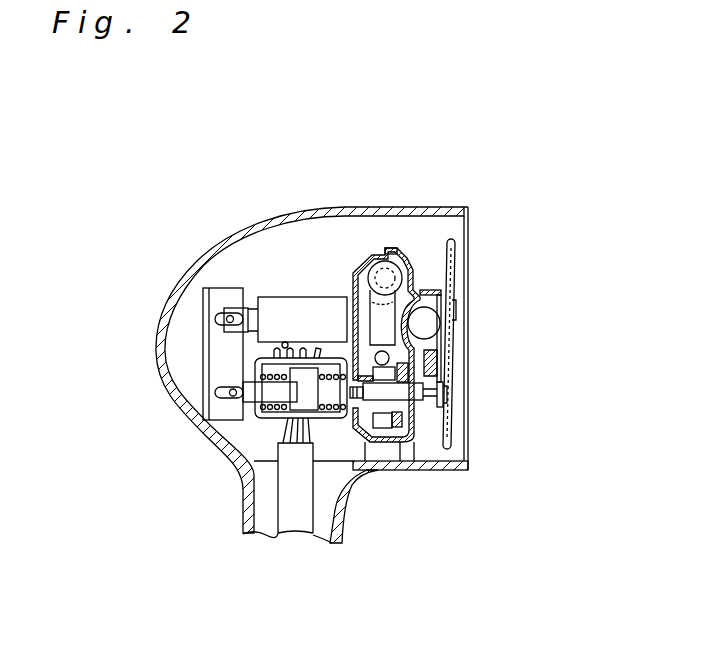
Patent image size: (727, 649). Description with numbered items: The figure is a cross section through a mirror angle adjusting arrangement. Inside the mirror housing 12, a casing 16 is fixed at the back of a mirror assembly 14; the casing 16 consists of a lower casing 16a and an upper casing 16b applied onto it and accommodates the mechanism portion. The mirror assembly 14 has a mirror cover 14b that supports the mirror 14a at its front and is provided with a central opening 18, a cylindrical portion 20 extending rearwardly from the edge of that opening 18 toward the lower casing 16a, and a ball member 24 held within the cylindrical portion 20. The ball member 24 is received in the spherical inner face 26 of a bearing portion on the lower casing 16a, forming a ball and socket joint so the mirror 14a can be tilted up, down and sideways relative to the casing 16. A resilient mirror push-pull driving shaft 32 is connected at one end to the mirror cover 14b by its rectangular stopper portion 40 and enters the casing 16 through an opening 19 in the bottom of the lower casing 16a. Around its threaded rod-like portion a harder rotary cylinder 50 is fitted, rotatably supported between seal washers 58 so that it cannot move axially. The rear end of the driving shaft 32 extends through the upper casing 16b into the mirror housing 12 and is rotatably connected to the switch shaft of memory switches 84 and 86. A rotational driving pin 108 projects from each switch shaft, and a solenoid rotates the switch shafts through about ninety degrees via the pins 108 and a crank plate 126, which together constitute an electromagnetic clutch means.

The mirror housing 12 is at (157, 361).
The mirror assembly 14 is at (459, 263).
The mirror 14a is at (456, 291).
The mirror cover 14b is at (450, 236).
The casing 16 is at (353, 261).
The lower casing 16a is at (402, 252).
The upper casing 16b is at (362, 250).
The opening 18 is at (445, 336).
The openings 19 is at (466, 470).
The cylindrical portion 20 is at (424, 258).
The ball member 24 is at (440, 320).
The spherical inner face 26 is at (436, 348).
The mirror push-pull driving shaft 32 is at (365, 470).
The stopper portion 40 is at (445, 396).
The rotary cylinder 50 is at (401, 442).
The seal washers 58 is at (411, 443).
The memory switch 84 is at (264, 431).
The memory switch 86 is at (302, 296).
The rotational driving pin 108 is at (230, 314).
The crank plate 126 is at (217, 405).